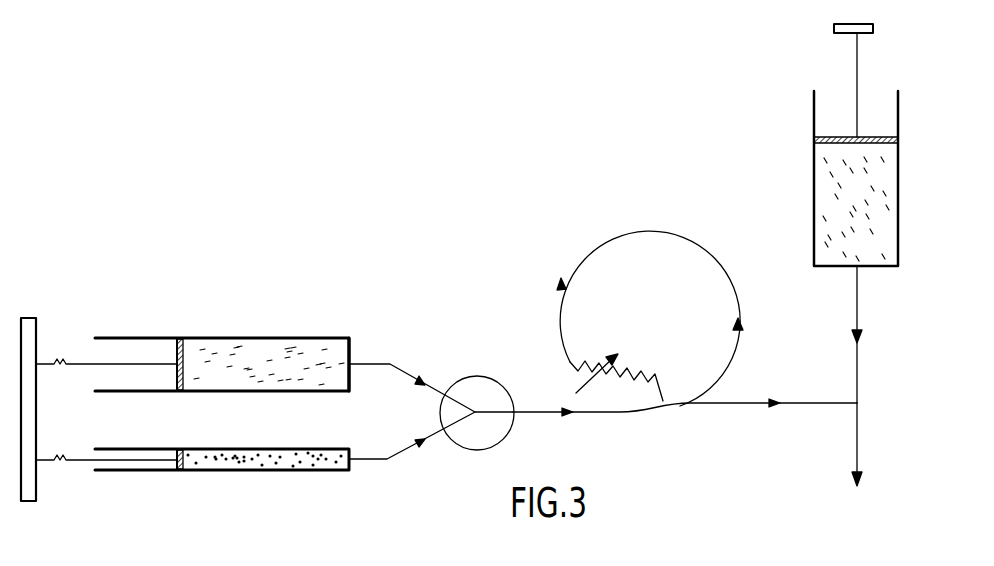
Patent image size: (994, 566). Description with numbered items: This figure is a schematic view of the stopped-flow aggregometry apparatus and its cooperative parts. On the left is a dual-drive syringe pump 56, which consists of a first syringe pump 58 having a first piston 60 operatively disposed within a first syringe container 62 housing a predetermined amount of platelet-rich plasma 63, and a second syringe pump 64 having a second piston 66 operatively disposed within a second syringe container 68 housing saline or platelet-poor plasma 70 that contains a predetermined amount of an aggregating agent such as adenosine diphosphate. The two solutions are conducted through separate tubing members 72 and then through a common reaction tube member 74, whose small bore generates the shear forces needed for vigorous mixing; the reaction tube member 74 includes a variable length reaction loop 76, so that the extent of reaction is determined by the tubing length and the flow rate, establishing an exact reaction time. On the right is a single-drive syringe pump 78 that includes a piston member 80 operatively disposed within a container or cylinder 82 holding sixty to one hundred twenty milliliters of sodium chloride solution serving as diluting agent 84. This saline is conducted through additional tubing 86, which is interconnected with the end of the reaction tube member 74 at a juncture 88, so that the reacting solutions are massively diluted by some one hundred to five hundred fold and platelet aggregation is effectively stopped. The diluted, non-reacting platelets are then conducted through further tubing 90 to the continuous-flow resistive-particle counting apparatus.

The dual-drive syringe pump 56 is at (98, 309).
The first syringe pump 58 is at (192, 356).
The first piston 60 is at (186, 392).
The first syringe container 62 is at (313, 393).
The platelet-rich plasma 63 is at (268, 376).
The second syringe pump 64 is at (192, 462).
The second piston 66 is at (184, 471).
The second syringe container 68 is at (268, 448).
The saline or platelet-poor plasma 70 is at (232, 472).
The tubing members 72 is at (388, 363).
The reaction tube member 74 is at (535, 408).
The variable length reaction loop 76 is at (710, 253).
The single-drive syringe pump 78 is at (833, 145).
The piston member 80 is at (876, 132).
The container or cylinder 82 is at (812, 168).
The diluting agent 84 is at (868, 207).
The additional tubing 86 is at (860, 372).
The juncture 88 is at (860, 406).
The further tubing 90 is at (856, 432).